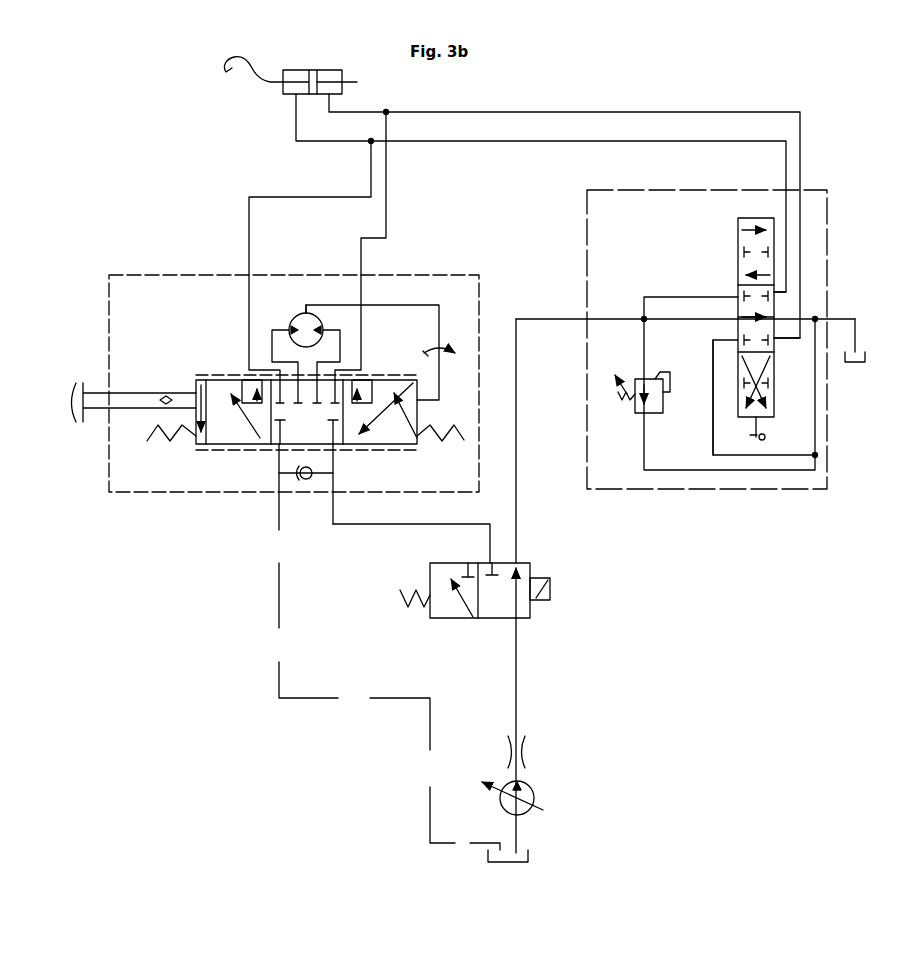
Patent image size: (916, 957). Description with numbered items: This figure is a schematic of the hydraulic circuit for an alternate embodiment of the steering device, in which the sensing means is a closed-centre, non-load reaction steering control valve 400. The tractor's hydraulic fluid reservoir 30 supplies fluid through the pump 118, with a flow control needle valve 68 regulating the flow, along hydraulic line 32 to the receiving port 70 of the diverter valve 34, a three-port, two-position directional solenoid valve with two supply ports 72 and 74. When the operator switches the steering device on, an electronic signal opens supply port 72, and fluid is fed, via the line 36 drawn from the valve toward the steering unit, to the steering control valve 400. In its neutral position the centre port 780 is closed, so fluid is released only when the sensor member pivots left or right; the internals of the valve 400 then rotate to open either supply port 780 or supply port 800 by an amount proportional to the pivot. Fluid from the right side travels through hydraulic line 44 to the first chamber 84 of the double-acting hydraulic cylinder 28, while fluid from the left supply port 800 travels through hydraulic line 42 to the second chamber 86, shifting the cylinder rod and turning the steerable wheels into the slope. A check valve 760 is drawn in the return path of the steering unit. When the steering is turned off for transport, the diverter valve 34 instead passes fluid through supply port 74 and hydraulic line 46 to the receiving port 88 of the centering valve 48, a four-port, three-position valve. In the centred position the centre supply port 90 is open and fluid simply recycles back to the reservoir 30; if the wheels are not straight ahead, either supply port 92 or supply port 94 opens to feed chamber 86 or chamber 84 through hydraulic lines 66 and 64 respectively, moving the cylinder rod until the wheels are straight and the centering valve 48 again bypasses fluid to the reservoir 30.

The double-acting hydraulic cylinder 28 is at (320, 68).
The first chamber 84 is at (330, 72).
The second chamber 86 is at (292, 73).
The hydraulic line 64 is at (592, 111).
The hydraulic line 66 is at (578, 142).
The hydraulic line 42 is at (371, 170).
The hydraulic line 44 is at (388, 173).
The steering control valve 400 is at (271, 405).
The left supply port 800 is at (273, 377).
The centre port / supply port 780 is at (335, 378).
The check valve 760 is at (334, 468).
The pilot line 36 is at (387, 527).
The diverter valve 34 is at (508, 580).
The supply port 72 is at (489, 562).
The supply port 74 is at (517, 563).
The hydraulic line 46 is at (517, 437).
The receiving port 70 is at (516, 620).
The hydraulic line 32 is at (518, 672).
The flow control needle valve 68 is at (536, 752).
The pump 118 is at (540, 782).
The hydraulic fluid reservoir 30 is at (530, 856).
The centering valve 48 is at (698, 347).
The supply port 92 is at (776, 291).
The centre supply port 90 is at (778, 314).
The supply port 94 is at (776, 340).
The receiving port 88 is at (740, 318).